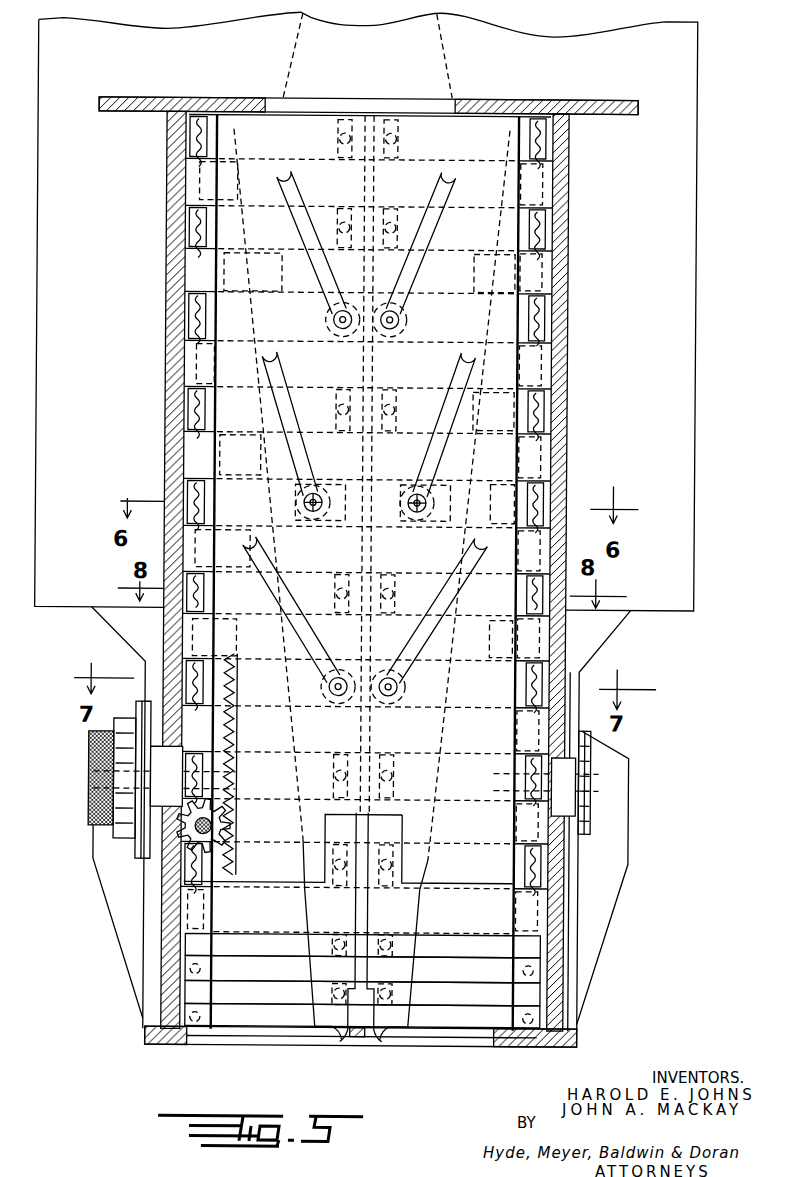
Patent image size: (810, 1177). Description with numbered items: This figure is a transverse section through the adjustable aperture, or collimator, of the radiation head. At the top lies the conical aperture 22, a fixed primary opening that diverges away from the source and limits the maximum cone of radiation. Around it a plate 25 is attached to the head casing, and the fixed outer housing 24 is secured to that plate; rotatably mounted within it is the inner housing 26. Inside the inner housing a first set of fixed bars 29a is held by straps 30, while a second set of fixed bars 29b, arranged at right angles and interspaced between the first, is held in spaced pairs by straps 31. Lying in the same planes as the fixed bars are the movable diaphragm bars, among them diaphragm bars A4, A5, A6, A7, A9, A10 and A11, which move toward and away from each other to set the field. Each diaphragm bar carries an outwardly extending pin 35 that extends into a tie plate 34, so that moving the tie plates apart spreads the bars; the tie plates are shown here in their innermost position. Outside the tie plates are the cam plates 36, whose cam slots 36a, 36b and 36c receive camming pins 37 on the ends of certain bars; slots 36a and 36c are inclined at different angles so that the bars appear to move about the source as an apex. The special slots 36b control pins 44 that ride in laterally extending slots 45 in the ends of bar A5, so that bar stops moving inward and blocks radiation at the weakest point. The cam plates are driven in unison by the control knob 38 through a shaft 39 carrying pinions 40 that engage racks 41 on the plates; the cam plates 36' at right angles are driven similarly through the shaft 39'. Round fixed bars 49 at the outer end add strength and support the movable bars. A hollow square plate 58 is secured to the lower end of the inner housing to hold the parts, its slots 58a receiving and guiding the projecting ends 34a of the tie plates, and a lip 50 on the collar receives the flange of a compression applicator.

The conical aperture 22 is at (304, 52).
The outer housing 24 is at (694, 395).
The plate 25 is at (636, 101).
The inner housing 26 is at (612, 640).
The first set of fixed bars 29a is at (545, 134).
The second set of fixed bars 29b is at (545, 178).
The straps 30 is at (187, 131).
The straps 31 is at (197, 178).
The tie plates 34 is at (252, 112).
The ends of tie plates 34a is at (348, 1043).
The pin 35 is at (335, 139).
The cam plates 36 is at (344, 571).
The cam plates 36' is at (576, 235).
The cam slot 36a is at (302, 224).
The cam slot 36b is at (332, 395).
The cam slot 36c is at (344, 625).
The camming pins 37 is at (332, 320).
The control knob 38 is at (90, 800).
The shaft 39 is at (520, 782).
The shaft 39' is at (224, 826).
The pinions 40 is at (201, 868).
The racks 41 is at (240, 771).
The pins 44 is at (422, 502).
The laterally extending slots 45 is at (350, 488).
The round fixed bars 49 is at (525, 972).
The lip 50 is at (212, 1047).
The hollow square plate 58 is at (155, 1047).
The slots 58a is at (452, 1043).
The diaphragm bar A4 is at (480, 420).
The diaphragm bar A5 is at (500, 500).
The diaphragm bar A6 is at (460, 612).
The diaphragm bar A7 is at (440, 700).
The diaphragm bar A9 is at (435, 870).
The diaphragm bar A10 is at (428, 947).
The diaphragm bar A11 is at (428, 997).